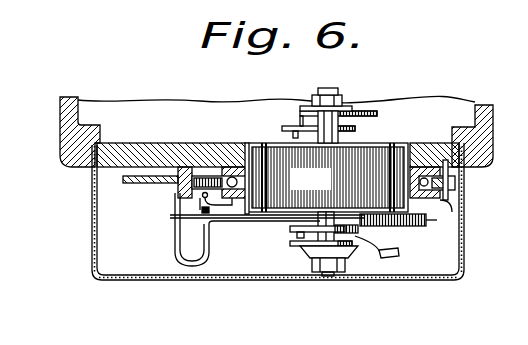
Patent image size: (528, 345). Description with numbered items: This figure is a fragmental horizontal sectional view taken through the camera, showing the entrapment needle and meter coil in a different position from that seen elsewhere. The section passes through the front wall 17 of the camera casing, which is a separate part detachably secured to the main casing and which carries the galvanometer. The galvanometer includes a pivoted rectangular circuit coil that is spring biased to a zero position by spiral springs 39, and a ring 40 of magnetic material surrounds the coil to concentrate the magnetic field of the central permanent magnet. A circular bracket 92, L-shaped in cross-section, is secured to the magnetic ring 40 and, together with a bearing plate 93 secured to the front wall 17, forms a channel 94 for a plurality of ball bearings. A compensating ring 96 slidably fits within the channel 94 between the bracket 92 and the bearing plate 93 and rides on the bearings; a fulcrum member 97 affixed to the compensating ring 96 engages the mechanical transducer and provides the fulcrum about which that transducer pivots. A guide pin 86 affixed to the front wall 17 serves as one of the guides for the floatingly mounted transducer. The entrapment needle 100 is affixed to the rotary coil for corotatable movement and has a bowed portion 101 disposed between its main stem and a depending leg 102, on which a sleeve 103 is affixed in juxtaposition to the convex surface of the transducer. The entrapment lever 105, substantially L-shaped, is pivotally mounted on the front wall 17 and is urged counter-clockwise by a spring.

The front wall 17 is at (113, 147).
The spiral springs 39 is at (362, 128).
The ring of magnetic material 40 is at (328, 188).
The guide pin 86 is at (200, 216).
The circular bracket 92 is at (452, 212).
The bearing plate 93 is at (423, 176).
The channel 94 is at (450, 194).
The compensating ring 96 is at (455, 187).
The fulcrum member 97 is at (197, 168).
The entrapment needle 100 is at (270, 221).
The bowed portion 101 is at (194, 268).
The depending leg 102 is at (176, 236).
The sleeve 103 is at (178, 168).
The entrapment lever 105 is at (143, 184).